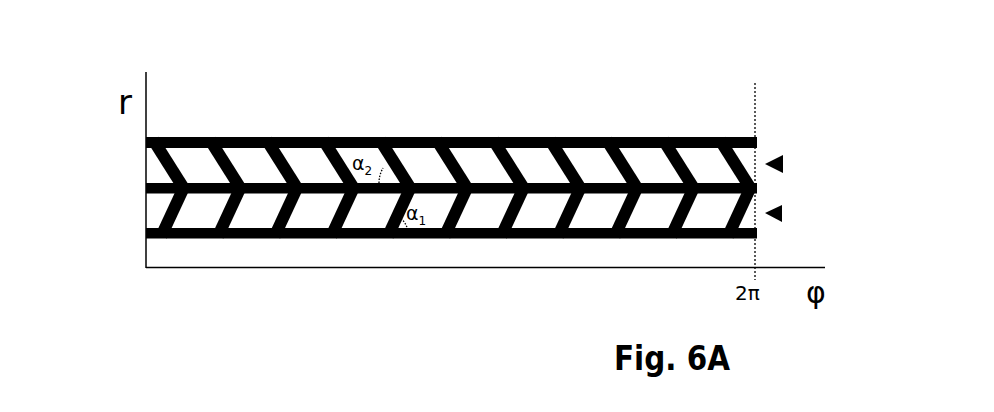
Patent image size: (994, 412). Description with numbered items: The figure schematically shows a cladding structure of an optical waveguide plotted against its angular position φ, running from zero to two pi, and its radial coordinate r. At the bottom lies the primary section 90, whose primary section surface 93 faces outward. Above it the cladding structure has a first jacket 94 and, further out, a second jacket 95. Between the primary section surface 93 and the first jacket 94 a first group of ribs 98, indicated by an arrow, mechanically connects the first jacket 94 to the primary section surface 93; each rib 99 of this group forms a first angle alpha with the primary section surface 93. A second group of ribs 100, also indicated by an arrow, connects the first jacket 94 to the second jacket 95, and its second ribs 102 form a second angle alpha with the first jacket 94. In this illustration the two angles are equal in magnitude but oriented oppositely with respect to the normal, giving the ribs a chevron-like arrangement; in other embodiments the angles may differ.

The primary section 90 is at (235, 252).
The primary section surface 93 is at (182, 240).
The first jacket 94 is at (153, 180).
The second jacket 95 is at (245, 137).
The first group of ribs 98 is at (781, 214).
The rib 99 is at (470, 218).
The second group of ribs 100 is at (782, 165).
The second ribs 102 is at (558, 157).